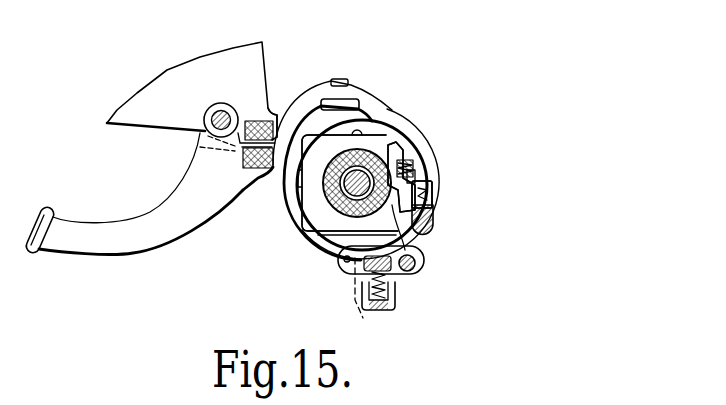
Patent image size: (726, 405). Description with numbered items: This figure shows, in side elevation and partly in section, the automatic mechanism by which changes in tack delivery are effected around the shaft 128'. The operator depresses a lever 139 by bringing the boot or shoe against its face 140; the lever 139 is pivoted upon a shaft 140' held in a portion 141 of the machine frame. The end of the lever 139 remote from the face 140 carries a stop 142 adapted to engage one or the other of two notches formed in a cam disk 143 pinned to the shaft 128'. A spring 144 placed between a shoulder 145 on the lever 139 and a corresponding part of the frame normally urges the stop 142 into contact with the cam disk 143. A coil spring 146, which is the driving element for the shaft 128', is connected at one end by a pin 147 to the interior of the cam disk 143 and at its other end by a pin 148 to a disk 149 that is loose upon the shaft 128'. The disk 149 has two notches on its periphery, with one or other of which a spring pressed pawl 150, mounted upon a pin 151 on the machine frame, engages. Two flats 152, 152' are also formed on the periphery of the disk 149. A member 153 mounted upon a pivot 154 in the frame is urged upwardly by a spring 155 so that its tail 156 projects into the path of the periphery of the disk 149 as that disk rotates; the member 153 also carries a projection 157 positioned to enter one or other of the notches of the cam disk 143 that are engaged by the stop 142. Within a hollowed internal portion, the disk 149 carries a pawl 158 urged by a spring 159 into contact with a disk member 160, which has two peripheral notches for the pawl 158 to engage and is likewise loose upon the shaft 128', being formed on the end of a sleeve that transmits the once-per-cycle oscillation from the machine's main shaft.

The lever 139 is at (128, 245).
The face 140 is at (57, 214).
The shaft 140' is at (178, 138).
The portion of the machine frame 141 is at (252, 54).
The stop 142 is at (341, 106).
The cam disk 143 is at (415, 162).
The spring 144 is at (279, 126).
The shoulder 145 is at (240, 193).
The coil spring 146 is at (394, 150).
The pin 147 is at (400, 117).
The pin 148 is at (298, 202).
The disk 149 is at (407, 152).
The spring pressed pawl 150 is at (433, 188).
The pin 151 is at (432, 228).
The flat 152 is at (370, 147).
The flat 152' is at (326, 257).
The member 153 is at (423, 252).
The pivot 154 is at (421, 267).
The spring 155 is at (397, 293).
The tail 156 is at (346, 260).
The projection 157 is at (363, 318).
The pawl 158 is at (400, 148).
The spring 159 is at (412, 176).
The disk member 160 is at (433, 213).
The shaft 128' is at (294, 227).